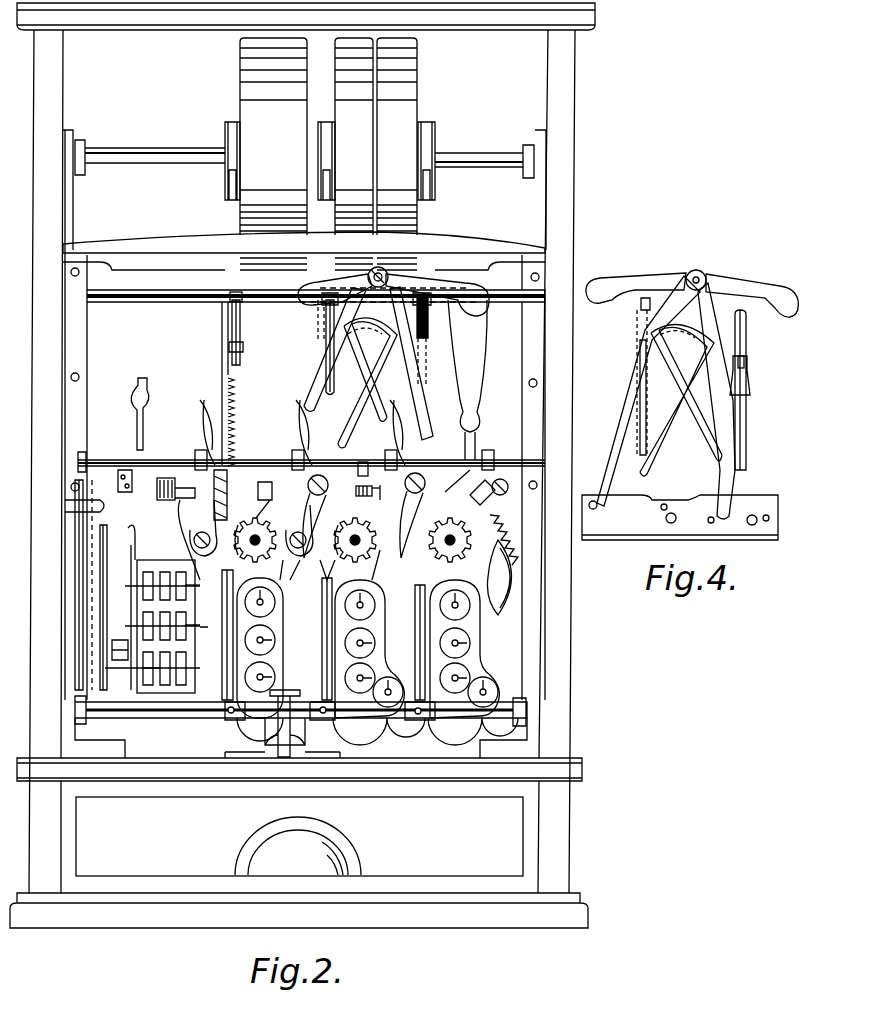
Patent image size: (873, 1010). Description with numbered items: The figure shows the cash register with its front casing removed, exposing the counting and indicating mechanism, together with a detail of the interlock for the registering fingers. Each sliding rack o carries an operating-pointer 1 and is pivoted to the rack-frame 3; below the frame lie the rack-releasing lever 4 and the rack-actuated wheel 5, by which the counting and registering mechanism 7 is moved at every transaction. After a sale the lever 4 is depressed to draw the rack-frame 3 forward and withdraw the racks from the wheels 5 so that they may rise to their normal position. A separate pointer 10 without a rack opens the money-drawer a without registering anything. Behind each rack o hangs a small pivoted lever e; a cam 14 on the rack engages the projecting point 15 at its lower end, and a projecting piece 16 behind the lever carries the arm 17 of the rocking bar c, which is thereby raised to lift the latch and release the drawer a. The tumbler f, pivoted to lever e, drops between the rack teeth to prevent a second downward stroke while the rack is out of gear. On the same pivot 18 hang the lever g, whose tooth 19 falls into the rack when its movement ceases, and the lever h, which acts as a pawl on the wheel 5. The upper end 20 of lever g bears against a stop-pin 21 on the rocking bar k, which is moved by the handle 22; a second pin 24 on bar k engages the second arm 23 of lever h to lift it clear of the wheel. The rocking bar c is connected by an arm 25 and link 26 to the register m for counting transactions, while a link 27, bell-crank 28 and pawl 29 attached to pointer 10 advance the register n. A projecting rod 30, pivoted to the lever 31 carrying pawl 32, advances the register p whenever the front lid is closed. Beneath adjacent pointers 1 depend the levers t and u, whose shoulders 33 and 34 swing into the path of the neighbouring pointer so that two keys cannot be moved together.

In FIG. 2, the operating-pointer 1 is at (232, 297).
In FIG. 4, the operating-pointer 1 is at (648, 322).
In FIG. 2, the rack-frame 3 is at (325, 495).
In FIG. 4, the rack-frame 3 is at (747, 390).
In FIG. 2, the rack-releasing lever 4 is at (282, 714).
In FIG. 2, the rack-actuated wheel 5 is at (352, 540).
In FIG. 2, the counting and registering mechanism 7 is at (377, 661).
In FIG. 2, the pointer 10 is at (143, 435).
In FIG. 2, the projection or cam 14 is at (188, 488).
In FIG. 2, the projecting point 15 is at (295, 538).
In FIG. 2, the projecting piece 16 is at (178, 540).
In FIG. 2, the arm 17 is at (382, 488).
In FIG. 2, the pivot 18 is at (337, 515).
In FIG. 2, the tooth 19 is at (330, 569).
In FIG. 2, the upper end of lever g 20 is at (289, 435).
In FIG. 2, the stop-pin 21 is at (239, 455).
In FIG. 2, the handle or lever 22 is at (96, 585).
In FIG. 2, the second arm 23 is at (433, 458).
In FIG. 2, the second pin 24 is at (382, 495).
In FIG. 2, the arm 25 is at (165, 478).
In FIG. 2, the link 26 is at (218, 635).
In FIG. 2, the link 27 is at (99, 509).
In FIG. 2, the bell-crank 28 is at (162, 620).
In FIG. 2, the pawl 29 is at (118, 616).
In FIG. 2, the projecting finger or rod 30 is at (122, 540).
In FIG. 2, the lever 31 is at (90, 585).
In FIG. 2, the pawl 32 is at (123, 640).
In FIG. 2, the shoulder 33 is at (367, 383).
In FIG. 4, the shoulder 33 is at (681, 401).
In FIG. 2, the shoulder 34 is at (361, 322).
In FIG. 4, the shoulder 34 is at (675, 327).
In FIG. 2, the money-drawer a is at (298, 836).
In FIG. 2, the rocking bar c is at (370, 482).
In FIG. 2, the lever e is at (290, 540).
In FIG. 2, the catch or tumbler f is at (290, 573).
In FIG. 2, the lever g is at (305, 427).
In FIG. 2, the lever h is at (435, 514).
In FIG. 2, the rocking bar k is at (311, 457).
In FIG. 2, the register m is at (197, 620).
In FIG. 2, the register n is at (189, 573).
In FIG. 2, the rack o is at (236, 384).
In FIG. 2, the register p is at (147, 670).
In FIG. 2, the lever t is at (331, 349).
In FIG. 4, the lever t is at (648, 391).
In FIG. 2, the lever u is at (417, 363).
In FIG. 4, the lever u is at (715, 401).